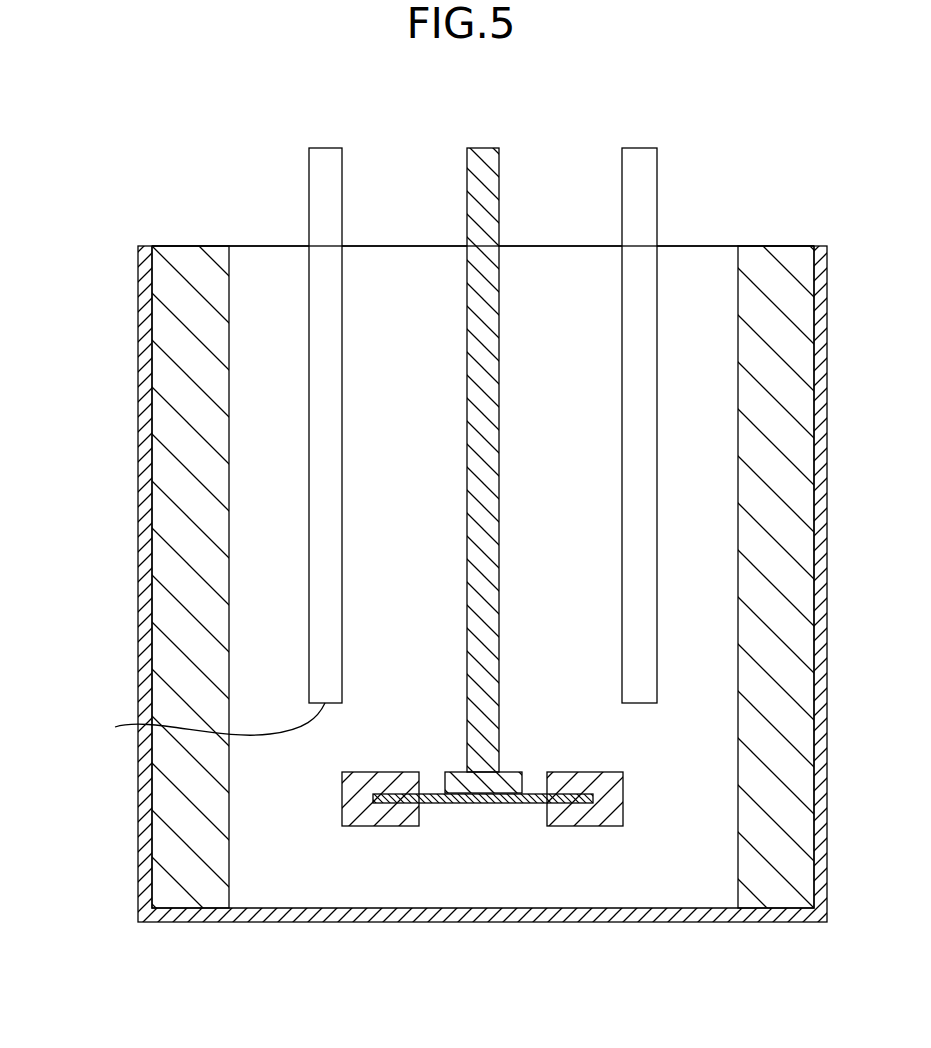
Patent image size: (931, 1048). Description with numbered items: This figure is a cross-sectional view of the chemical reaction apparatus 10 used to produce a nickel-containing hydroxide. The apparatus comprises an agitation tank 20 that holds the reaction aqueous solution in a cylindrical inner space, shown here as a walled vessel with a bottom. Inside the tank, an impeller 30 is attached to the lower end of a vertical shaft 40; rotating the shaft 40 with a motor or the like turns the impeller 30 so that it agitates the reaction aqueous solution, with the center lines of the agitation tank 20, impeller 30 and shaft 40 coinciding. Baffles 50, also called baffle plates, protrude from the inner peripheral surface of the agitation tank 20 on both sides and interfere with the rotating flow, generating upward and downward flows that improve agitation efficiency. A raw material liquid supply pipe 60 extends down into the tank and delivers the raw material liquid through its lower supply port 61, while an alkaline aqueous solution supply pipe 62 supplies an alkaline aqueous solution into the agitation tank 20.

The chemical reaction apparatus 10 is at (126, 431).
The agitation tank 20 is at (145, 515).
The impeller 30 is at (381, 815).
The shaft 40 is at (486, 157).
The baffle 50 is at (191, 260).
The raw material liquid supply pipe 60 is at (326, 157).
The supply port 61 is at (115, 727).
The alkaline aqueous solution supply pipe 62 is at (642, 157).